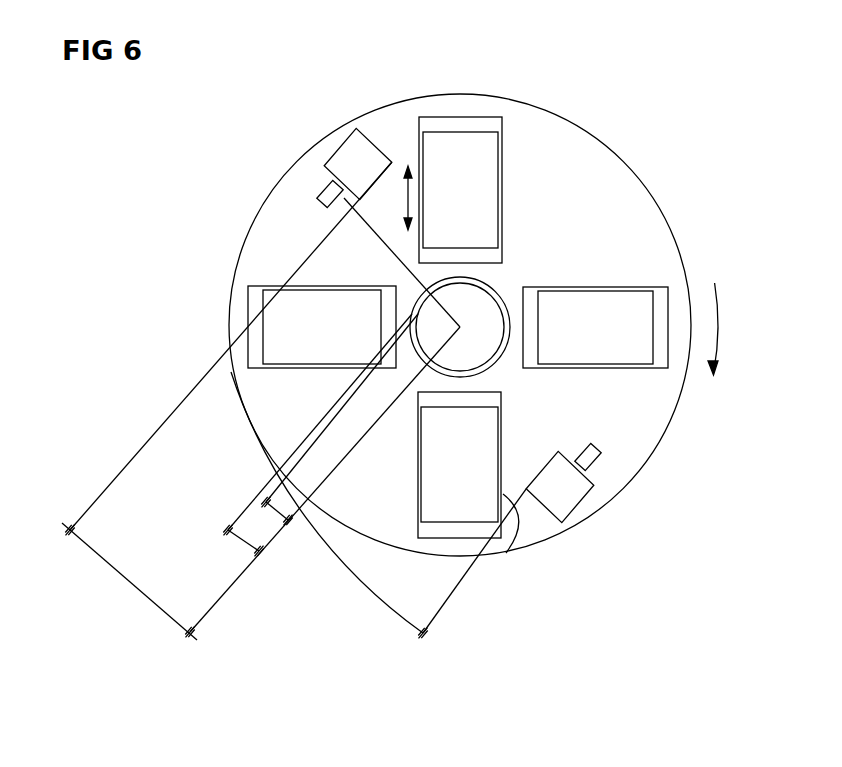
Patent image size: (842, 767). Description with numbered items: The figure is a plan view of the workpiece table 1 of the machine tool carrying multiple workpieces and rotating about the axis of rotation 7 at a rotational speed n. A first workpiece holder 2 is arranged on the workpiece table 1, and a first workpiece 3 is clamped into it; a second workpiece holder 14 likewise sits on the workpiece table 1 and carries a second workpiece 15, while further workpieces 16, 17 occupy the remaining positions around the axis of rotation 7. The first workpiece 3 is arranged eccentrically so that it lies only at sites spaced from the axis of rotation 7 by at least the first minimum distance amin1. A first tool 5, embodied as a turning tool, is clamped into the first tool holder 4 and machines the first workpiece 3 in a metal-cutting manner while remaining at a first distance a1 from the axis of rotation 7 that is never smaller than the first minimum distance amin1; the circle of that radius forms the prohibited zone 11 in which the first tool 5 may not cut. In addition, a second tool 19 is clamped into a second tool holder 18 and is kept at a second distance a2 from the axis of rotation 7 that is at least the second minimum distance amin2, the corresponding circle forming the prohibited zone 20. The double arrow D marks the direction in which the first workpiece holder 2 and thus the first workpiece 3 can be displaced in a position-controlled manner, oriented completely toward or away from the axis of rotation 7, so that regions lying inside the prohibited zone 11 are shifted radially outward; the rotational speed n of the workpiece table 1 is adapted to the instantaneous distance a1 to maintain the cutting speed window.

The workpiece table 1 is at (437, 94).
The first workpiece holder 2 is at (461, 116).
The first workpiece 3 is at (503, 166).
The first tool holder 4 is at (350, 126).
The first tool 5 is at (318, 199).
The axis of rotation 7 is at (431, 287).
The prohibited zone 11 is at (478, 277).
The second workpiece holder 14 is at (443, 540).
The second workpiece 15 is at (508, 554).
The further workpiece 16 is at (291, 369).
The further workpiece 17 is at (630, 287).
The second tool holder 18 is at (578, 501).
The second tool 19 is at (602, 455).
The prohibited zone 20 is at (462, 276).
The double arrow D is at (406, 197).
The rotational speed n is at (716, 325).
The first distance a1 is at (128, 582).
The second distance a2 is at (364, 574).
The first minimum distance amin1 is at (262, 514).
The second minimum distance amin2 is at (242, 546).